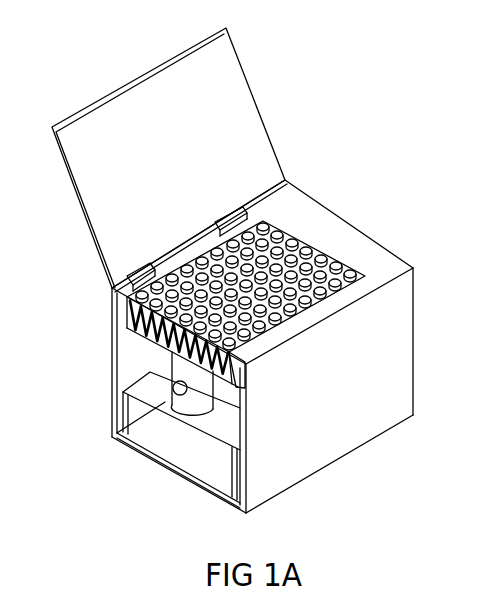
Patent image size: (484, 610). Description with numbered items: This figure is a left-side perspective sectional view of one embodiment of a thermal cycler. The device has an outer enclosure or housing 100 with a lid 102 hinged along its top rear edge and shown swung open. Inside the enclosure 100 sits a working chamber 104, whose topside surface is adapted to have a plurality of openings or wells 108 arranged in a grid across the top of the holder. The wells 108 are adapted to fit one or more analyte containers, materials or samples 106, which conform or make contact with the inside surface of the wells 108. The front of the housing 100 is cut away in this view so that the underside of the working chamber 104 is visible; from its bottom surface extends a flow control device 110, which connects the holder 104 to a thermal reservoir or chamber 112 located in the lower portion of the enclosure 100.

The outer enclosure or housing 100 is at (365, 285).
The lid 102 is at (238, 112).
The working chamber 104 is at (118, 318).
The analyte containers, materials or samples 106 is at (283, 238).
The wells 108 is at (294, 274).
The flow control device 110 is at (170, 365).
The thermal reservoir or chamber 112 is at (228, 445).